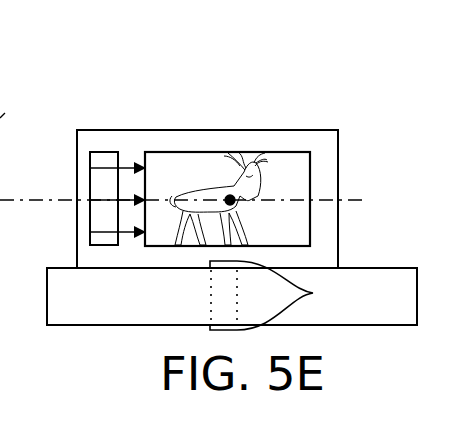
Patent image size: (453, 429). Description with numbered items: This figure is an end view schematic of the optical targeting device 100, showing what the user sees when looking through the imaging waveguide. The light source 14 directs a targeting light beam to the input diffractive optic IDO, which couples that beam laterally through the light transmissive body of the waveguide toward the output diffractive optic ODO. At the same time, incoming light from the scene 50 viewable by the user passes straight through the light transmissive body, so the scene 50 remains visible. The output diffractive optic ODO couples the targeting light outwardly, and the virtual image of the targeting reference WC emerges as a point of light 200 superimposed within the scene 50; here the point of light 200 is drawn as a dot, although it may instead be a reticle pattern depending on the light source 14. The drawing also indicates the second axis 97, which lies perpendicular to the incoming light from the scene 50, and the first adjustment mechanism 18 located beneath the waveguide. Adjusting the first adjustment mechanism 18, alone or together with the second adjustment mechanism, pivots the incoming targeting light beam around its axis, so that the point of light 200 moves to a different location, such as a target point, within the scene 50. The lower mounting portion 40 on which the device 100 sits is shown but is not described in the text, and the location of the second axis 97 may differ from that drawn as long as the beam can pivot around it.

The optical targeting device 100 is at (190, 123).
The scene 50 is at (264, 161).
The point of light 200 is at (230, 200).
The first adjustment mechanism 18 is at (313, 293).
The base 40 is at (142, 325).
The second axis 97 is at (43, 202).
The light source 14 is at (6, 106).
The input diffractive optic IDO is at (105, 152).
The output diffractive optic ODO is at (275, 152).
The targeting reference WC is at (108, 202).